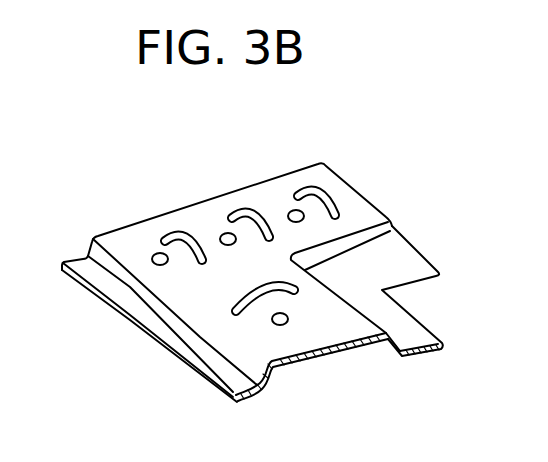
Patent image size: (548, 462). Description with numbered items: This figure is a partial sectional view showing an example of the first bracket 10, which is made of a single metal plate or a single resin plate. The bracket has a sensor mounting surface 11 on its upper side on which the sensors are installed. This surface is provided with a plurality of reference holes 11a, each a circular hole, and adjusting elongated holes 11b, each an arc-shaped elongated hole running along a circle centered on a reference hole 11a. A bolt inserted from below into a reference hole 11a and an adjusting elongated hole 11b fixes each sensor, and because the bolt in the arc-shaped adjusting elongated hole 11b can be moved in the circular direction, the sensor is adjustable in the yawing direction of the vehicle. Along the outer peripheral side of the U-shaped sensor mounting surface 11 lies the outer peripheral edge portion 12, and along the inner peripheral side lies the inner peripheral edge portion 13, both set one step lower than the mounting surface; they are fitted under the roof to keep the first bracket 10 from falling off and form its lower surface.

The first bracket 10 is at (349, 163).
The sensor mounting surface 11 is at (130, 236).
The reference hole 11a is at (291, 210).
The adjusting elongated hole 11b is at (272, 242).
The outer peripheral edge portion 12 is at (225, 374).
The inner peripheral edge portion 13 is at (407, 322).